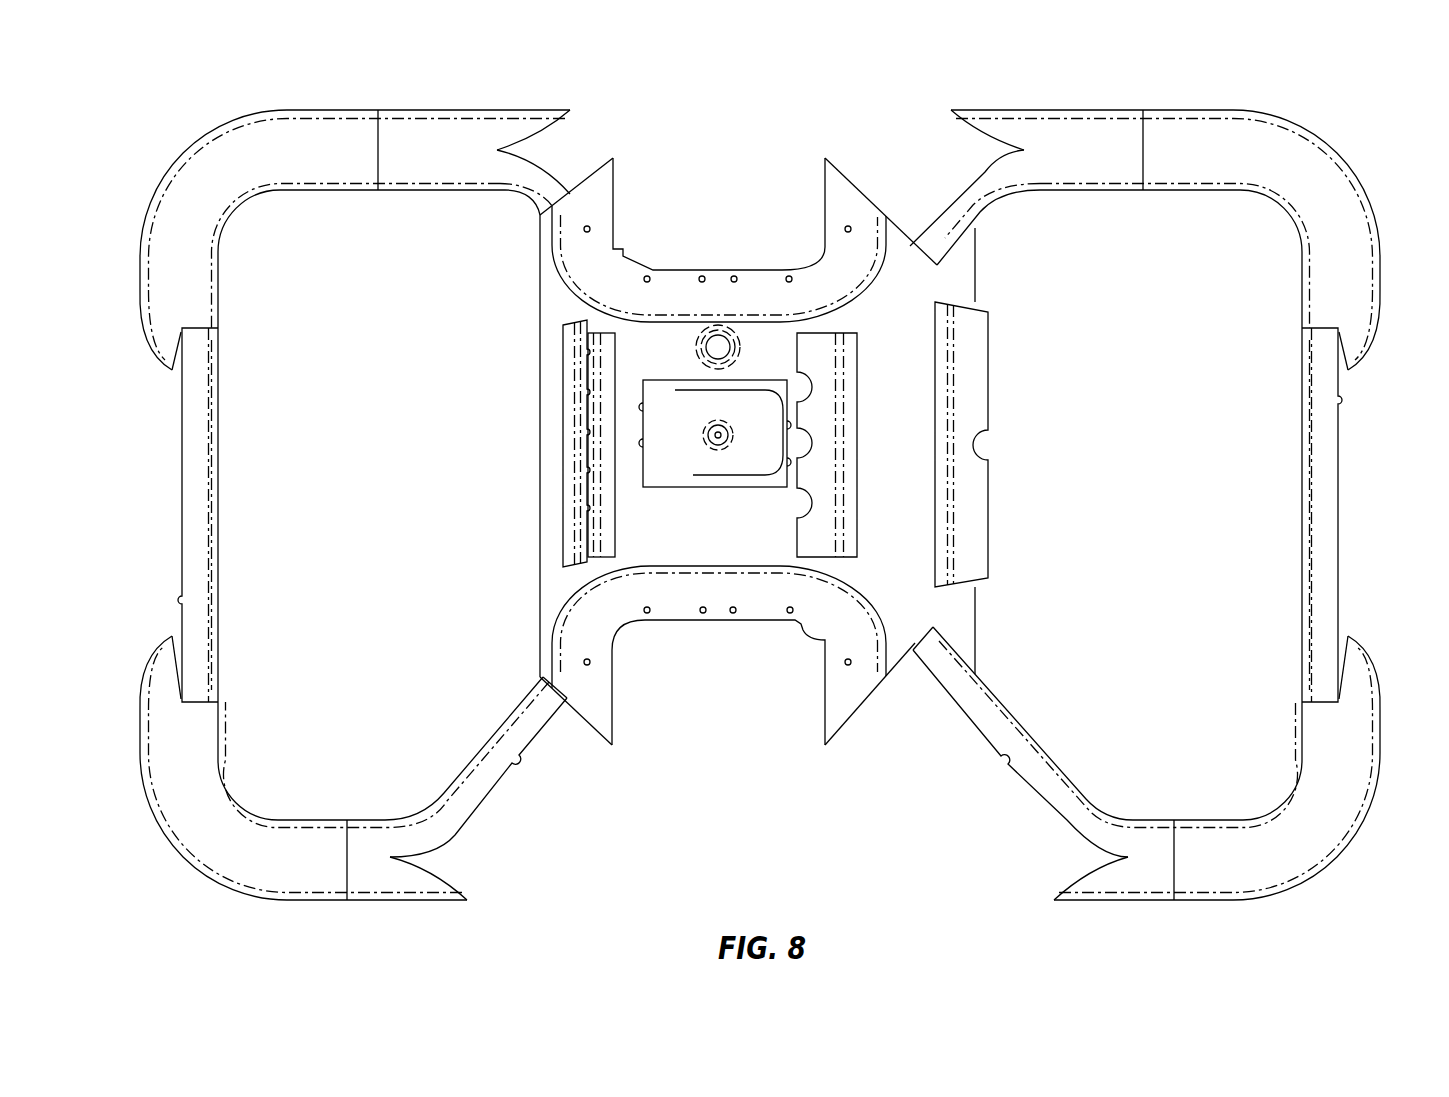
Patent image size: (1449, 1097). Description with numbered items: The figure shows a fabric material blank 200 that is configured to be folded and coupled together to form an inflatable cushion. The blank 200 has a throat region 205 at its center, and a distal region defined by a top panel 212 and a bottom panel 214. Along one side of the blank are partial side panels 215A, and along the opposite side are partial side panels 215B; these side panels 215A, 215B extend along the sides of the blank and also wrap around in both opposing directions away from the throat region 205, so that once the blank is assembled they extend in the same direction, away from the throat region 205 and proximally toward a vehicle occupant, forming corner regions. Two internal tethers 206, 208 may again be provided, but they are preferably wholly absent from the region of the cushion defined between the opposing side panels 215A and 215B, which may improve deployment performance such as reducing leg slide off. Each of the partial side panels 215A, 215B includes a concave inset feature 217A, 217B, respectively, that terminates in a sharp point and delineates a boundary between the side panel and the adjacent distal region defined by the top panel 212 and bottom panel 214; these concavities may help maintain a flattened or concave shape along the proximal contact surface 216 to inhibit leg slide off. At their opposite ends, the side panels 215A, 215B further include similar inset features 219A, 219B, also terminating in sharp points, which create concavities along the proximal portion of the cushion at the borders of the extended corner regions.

The fabric material blank 200 is at (1075, 82).
The throat region 205 is at (770, 181).
The internal tether 206 is at (825, 545).
The internal tether 208 is at (968, 572).
The top panel 212 is at (284, 377).
The bottom panel 214 is at (1237, 377).
The partial side panels 215A is at (355, 136).
The partial side panels 215B is at (355, 878).
The proximal contact surface 216 is at (182, 497).
The concave inset feature 217A is at (552, 145).
The concave inset feature 217B is at (450, 858).
The inset feature 219A is at (158, 369).
The inset feature 219B is at (158, 637).